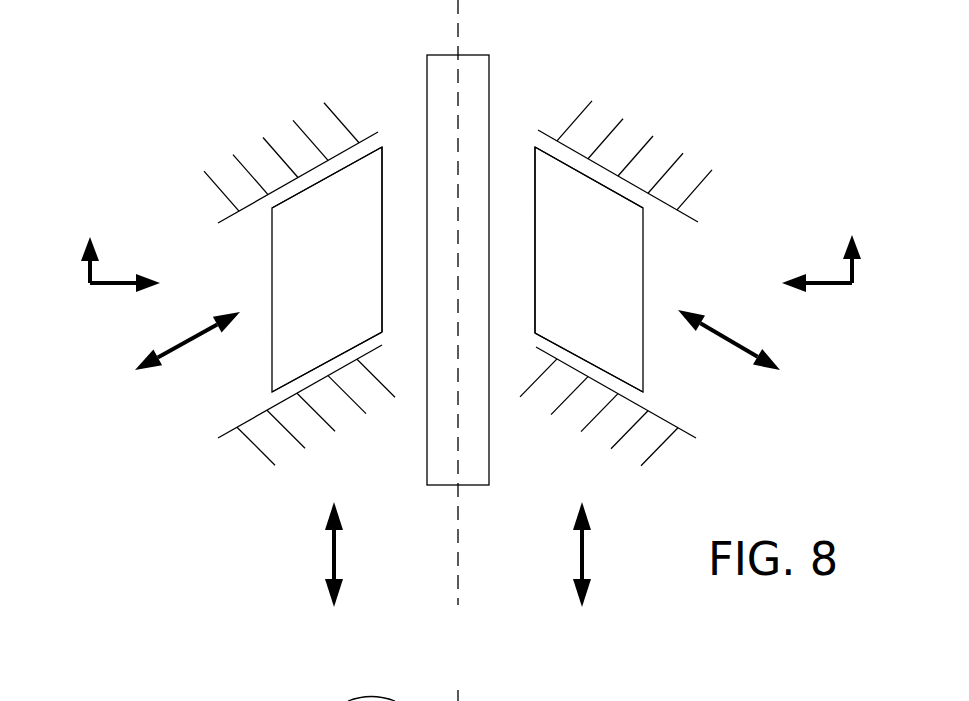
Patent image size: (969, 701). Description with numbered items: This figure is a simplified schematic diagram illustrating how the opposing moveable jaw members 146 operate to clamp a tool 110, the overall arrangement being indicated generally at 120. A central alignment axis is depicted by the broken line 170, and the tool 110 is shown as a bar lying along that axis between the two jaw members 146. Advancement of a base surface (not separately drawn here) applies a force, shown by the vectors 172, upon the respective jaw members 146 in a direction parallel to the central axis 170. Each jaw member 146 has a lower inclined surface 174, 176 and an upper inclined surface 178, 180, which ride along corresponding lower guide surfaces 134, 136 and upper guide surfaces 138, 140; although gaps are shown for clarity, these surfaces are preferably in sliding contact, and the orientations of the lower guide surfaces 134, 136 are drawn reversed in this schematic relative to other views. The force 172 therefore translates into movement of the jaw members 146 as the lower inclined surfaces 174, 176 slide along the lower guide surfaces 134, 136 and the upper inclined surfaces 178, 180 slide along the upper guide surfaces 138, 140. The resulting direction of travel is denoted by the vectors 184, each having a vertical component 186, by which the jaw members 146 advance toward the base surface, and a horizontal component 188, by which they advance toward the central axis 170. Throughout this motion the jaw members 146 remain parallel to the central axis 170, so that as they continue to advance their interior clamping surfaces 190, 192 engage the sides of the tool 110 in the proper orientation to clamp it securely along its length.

The tool 110 is at (438, 68).
The assembly 120 is at (641, 263).
The lower guide surface 134 is at (228, 431).
The lower guide surface 136 is at (692, 434).
The upper guide surface 138 is at (378, 133).
The upper guide surface 140 is at (540, 137).
The jaw member 146 is at (347, 281).
The central alignment axis 170 is at (457, 542).
The force vector 172 is at (330, 543).
The lower inclined surface 174 is at (307, 373).
The lower inclined surface 176 is at (608, 373).
The upper inclined surface 178 is at (305, 190).
The upper inclined surface 180 is at (610, 190).
The direction of travel vector 184 is at (193, 340).
The vertical component 186 is at (85, 277).
The horizontal component 188 is at (112, 280).
The interior clamping surface 190 is at (384, 303).
The interior clamping surface 192 is at (535, 303).